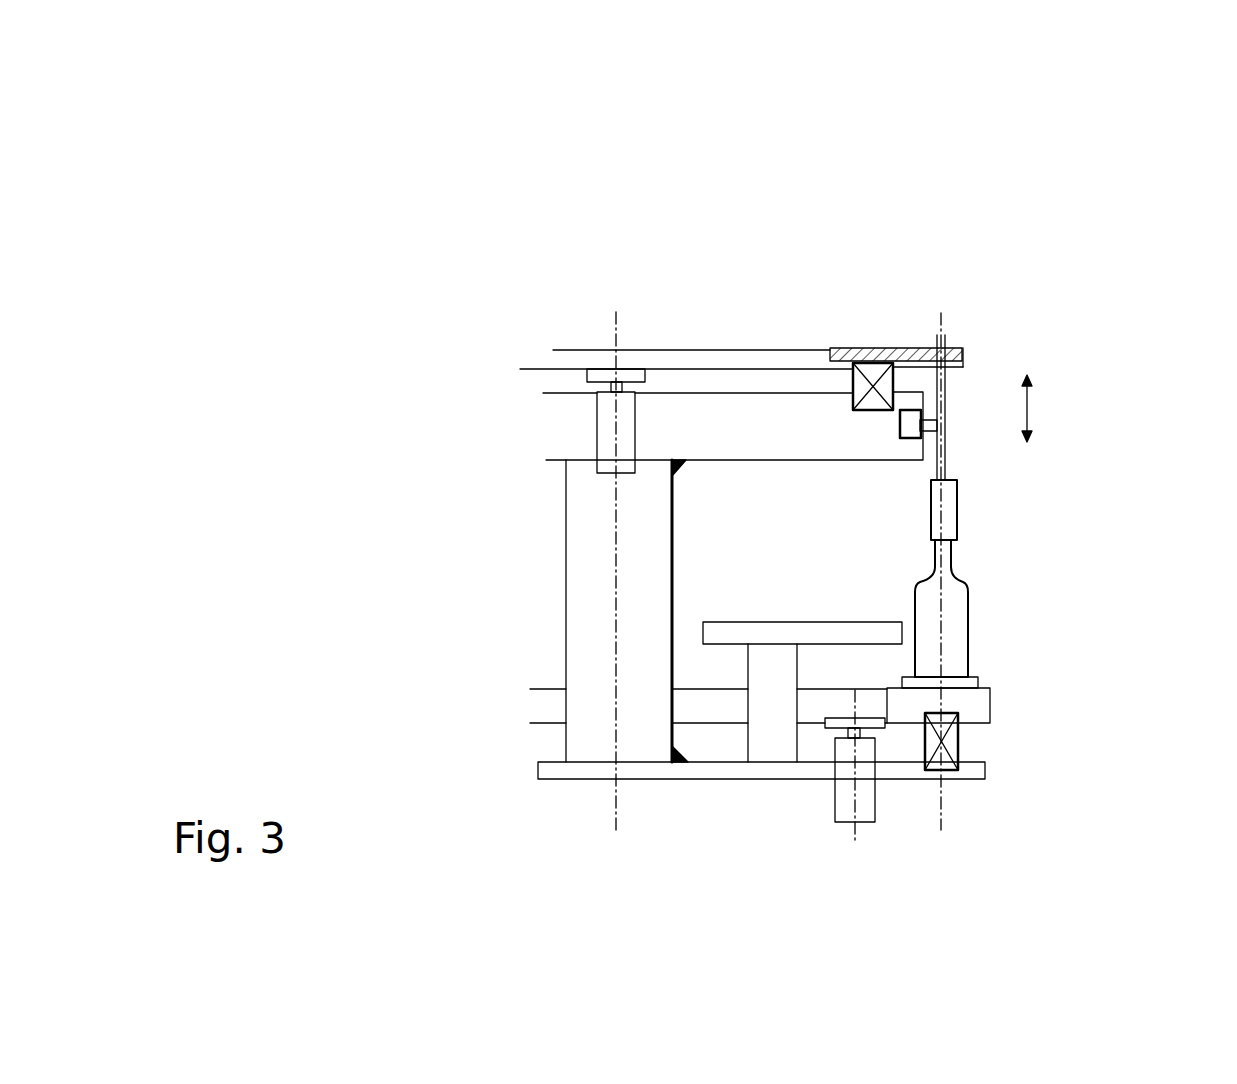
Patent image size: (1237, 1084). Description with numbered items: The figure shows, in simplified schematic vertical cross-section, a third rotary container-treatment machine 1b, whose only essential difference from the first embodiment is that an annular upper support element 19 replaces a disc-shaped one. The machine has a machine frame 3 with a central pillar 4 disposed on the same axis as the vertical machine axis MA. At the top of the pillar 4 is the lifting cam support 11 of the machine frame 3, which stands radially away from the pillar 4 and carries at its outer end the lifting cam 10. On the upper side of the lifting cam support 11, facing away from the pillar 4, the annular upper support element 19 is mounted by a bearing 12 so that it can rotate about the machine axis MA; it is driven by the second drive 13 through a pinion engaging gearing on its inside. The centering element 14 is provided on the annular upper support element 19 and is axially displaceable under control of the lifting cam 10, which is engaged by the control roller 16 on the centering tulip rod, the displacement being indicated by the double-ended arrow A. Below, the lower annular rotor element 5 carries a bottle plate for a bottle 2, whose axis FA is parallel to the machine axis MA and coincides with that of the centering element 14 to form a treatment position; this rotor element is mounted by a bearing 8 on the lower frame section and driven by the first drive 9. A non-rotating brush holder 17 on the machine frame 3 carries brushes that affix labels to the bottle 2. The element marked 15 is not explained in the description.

The third container-treatment machine 1b is at (420, 322).
The bottle 2 is at (970, 605).
The machine frame 3 is at (628, 801).
The central pillar 4 is at (596, 606).
The lower annular rotor element 5 is at (972, 700).
The bearing 8 is at (960, 750).
The first drive 9 is at (867, 795).
The lifting cam 10 is at (912, 415).
The lifting cam support 11 is at (703, 408).
The bearing 12 is at (793, 255).
The second drive 13 is at (605, 432).
The centering element 14 is at (990, 498).
The filling tube 15 is at (1015, 566).
The control roller 16 is at (925, 418).
The brush holder 17 is at (820, 628).
The annular upper support element 19 is at (907, 352).
The machine axis MA is at (612, 315).
The axis of the bottle plate FA is at (945, 313).
The double-ended arrow A is at (1050, 408).